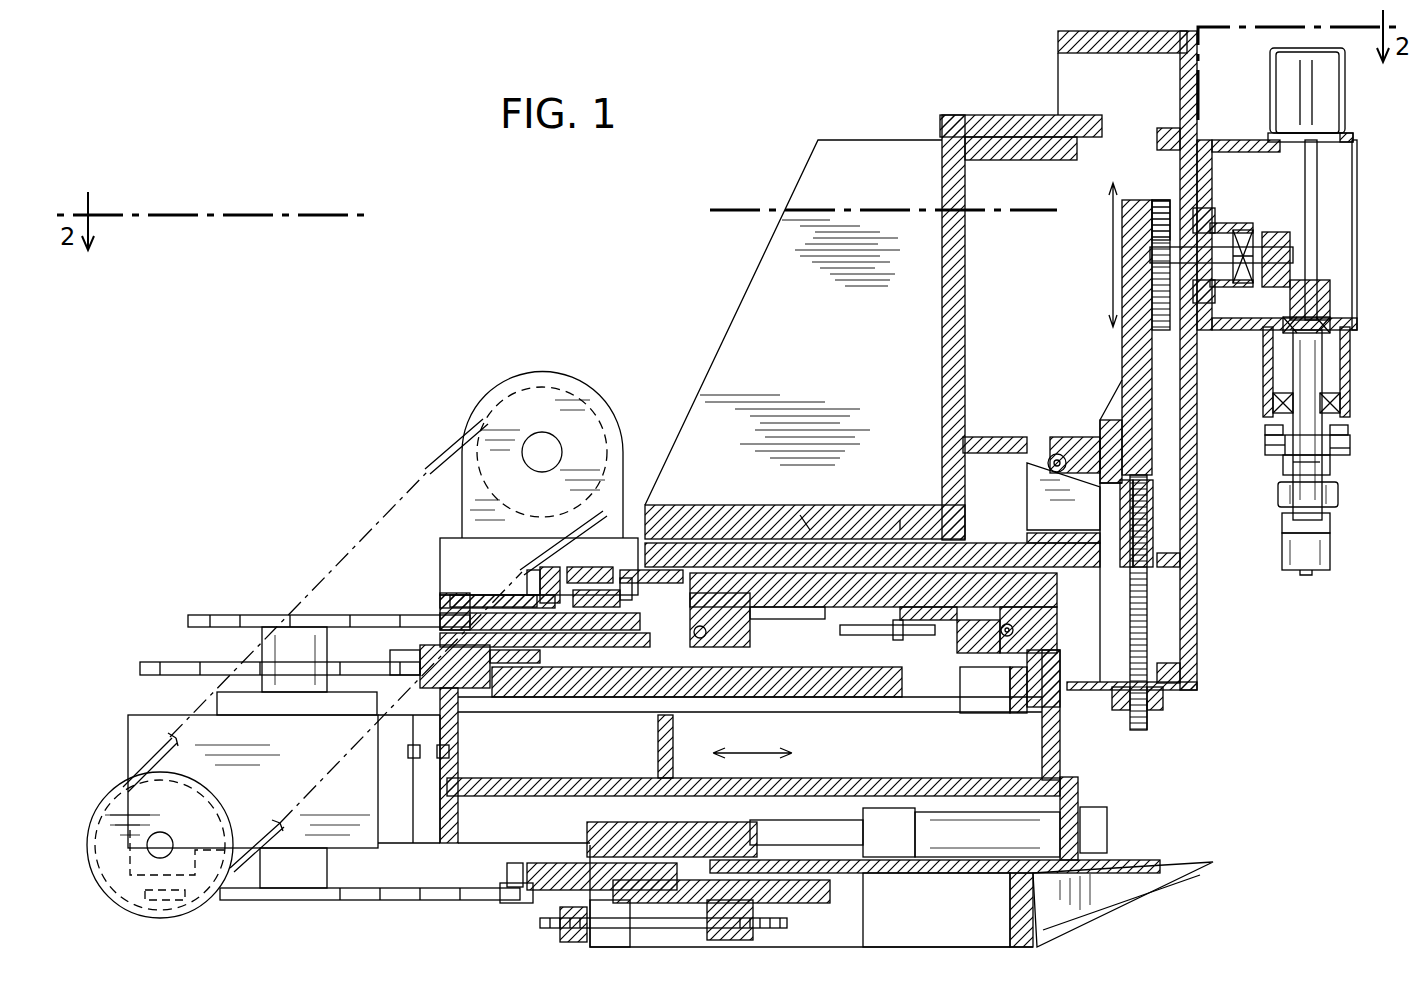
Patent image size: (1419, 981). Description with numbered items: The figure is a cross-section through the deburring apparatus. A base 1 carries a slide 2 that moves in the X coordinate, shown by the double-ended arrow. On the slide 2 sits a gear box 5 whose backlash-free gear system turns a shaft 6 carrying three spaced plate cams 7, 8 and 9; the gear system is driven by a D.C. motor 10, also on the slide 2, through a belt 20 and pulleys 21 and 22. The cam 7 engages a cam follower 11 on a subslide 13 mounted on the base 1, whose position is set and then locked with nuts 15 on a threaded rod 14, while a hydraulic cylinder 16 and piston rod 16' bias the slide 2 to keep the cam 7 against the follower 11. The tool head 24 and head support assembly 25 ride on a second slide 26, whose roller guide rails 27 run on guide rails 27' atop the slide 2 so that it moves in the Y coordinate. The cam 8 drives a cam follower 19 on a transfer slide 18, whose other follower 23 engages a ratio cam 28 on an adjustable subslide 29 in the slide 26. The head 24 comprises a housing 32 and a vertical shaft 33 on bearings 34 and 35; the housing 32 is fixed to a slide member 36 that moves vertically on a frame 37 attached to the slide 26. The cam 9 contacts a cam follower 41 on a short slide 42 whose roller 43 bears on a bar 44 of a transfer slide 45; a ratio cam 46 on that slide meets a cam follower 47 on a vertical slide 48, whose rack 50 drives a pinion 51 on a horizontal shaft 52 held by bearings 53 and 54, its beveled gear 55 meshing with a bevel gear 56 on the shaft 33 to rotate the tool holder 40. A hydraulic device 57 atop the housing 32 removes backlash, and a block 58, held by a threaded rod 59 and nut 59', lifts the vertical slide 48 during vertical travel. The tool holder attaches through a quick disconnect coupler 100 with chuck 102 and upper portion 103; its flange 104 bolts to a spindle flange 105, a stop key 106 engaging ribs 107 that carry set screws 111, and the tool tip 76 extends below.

The base 1 is at (925, 935).
The slide 2 is at (1060, 745).
The gear box 5 is at (279, 781).
The shaft 6 is at (265, 655).
The plate cam 7 is at (410, 900).
The plate cam 8 is at (150, 665).
The plate cam 9 is at (220, 615).
The D.C. motor 10 is at (595, 390).
The cam follower 11 is at (510, 903).
The subslide 13 is at (690, 925).
The threaded rod 14 is at (625, 930).
The nuts 15 is at (560, 935).
The hydraulic cylinder 16 is at (961, 802).
The piston rod 16' is at (806, 798).
The transfer slide 18 is at (540, 697).
The cam follower 19 is at (395, 660).
The belt 20 is at (450, 430).
The pulley 21 is at (145, 795).
The pulley 22 is at (530, 395).
The cam follower 23 is at (845, 620).
The tool head 24 is at (1304, 211).
The head support assembly 25 is at (1010, 75).
The second slide 26 is at (1030, 595).
The roller guide rails 27 is at (855, 676).
The guide rails 27' is at (874, 691).
The ratio cam 28 is at (925, 635).
The subslide 29 is at (900, 580).
The housing 32 is at (1235, 140).
The vertical shaft 33 is at (1322, 365).
The bearing 34 is at (1345, 325).
The bearing 35 is at (1340, 403).
The slide member 36 is at (1200, 575).
The frame 37 is at (770, 318).
The tool holder 40 is at (1345, 550).
The cam follower 41 is at (440, 605).
The short slide 42 is at (530, 590).
The roller 43 is at (612, 570).
The bar 44 is at (690, 535).
The transfer slide 45 is at (810, 530).
The ratio cam 46 is at (1030, 512).
The cam follower 47 is at (1048, 468).
The vertical slide 48 is at (1100, 358).
The rack 50 is at (1160, 315).
The pinion 51 is at (1152, 245).
The horizontal shaft 52 is at (1285, 255).
The bearing 53 is at (1215, 218).
The bearing 54 is at (1242, 230).
The beveled gear 55 is at (1290, 228).
The bevel gear 56 is at (1330, 300).
The hydraulic device 57 is at (1330, 85).
The block 58 is at (1160, 525).
The threaded rod 59 is at (1175, 602).
The nut 59' is at (1190, 715).
The tool tip 76 is at (1333, 565).
The quick disconnect coupler 100 is at (1352, 510).
The chuck 102 is at (1278, 496).
The upper portion 103 is at (1333, 470).
The flange 104 is at (1350, 452).
The flange 105 is at (1268, 450).
The stop key 106 is at (1288, 465).
The ribs 107 is at (1268, 445).
The set screws 111 is at (1265, 428).